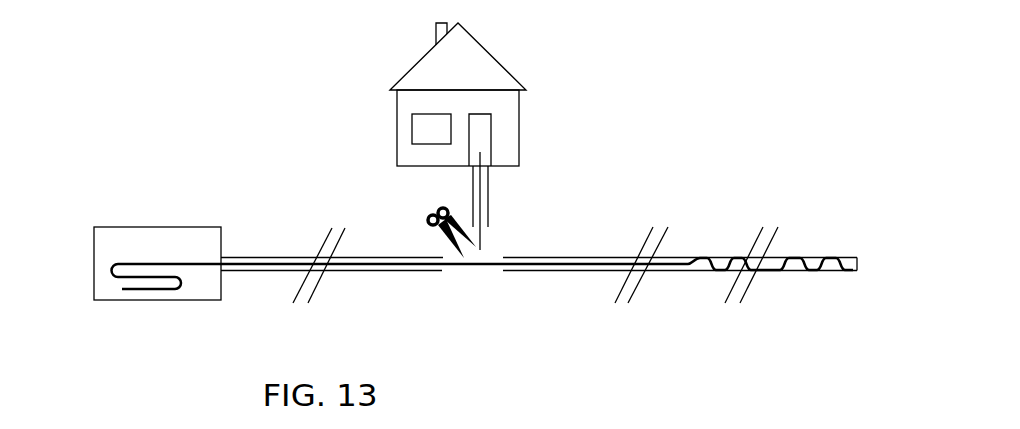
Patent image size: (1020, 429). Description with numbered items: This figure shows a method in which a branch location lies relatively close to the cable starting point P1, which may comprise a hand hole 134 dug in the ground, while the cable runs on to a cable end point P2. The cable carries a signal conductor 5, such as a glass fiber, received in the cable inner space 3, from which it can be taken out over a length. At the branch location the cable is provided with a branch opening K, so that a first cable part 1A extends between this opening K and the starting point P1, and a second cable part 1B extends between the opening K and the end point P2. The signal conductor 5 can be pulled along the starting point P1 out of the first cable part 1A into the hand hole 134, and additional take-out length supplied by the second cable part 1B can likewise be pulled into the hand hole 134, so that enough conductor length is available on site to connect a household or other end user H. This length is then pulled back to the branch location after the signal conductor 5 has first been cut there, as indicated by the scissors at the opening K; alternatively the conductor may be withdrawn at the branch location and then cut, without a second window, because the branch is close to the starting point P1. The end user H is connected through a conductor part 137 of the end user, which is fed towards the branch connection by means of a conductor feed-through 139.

The hand hole 134 is at (152, 227).
The signal conductor 5 is at (163, 289).
The first cable part 1A is at (275, 257).
The second cable part 1B is at (677, 273).
The cable inner space 3 is at (813, 262).
The cable starting point P1 is at (230, 280).
The cable end point P2 is at (851, 288).
The branch opening K is at (488, 280).
The end user H is at (469, 96).
The conductor part of the end user 137 is at (482, 156).
The conductor feed-through 139 is at (490, 190).